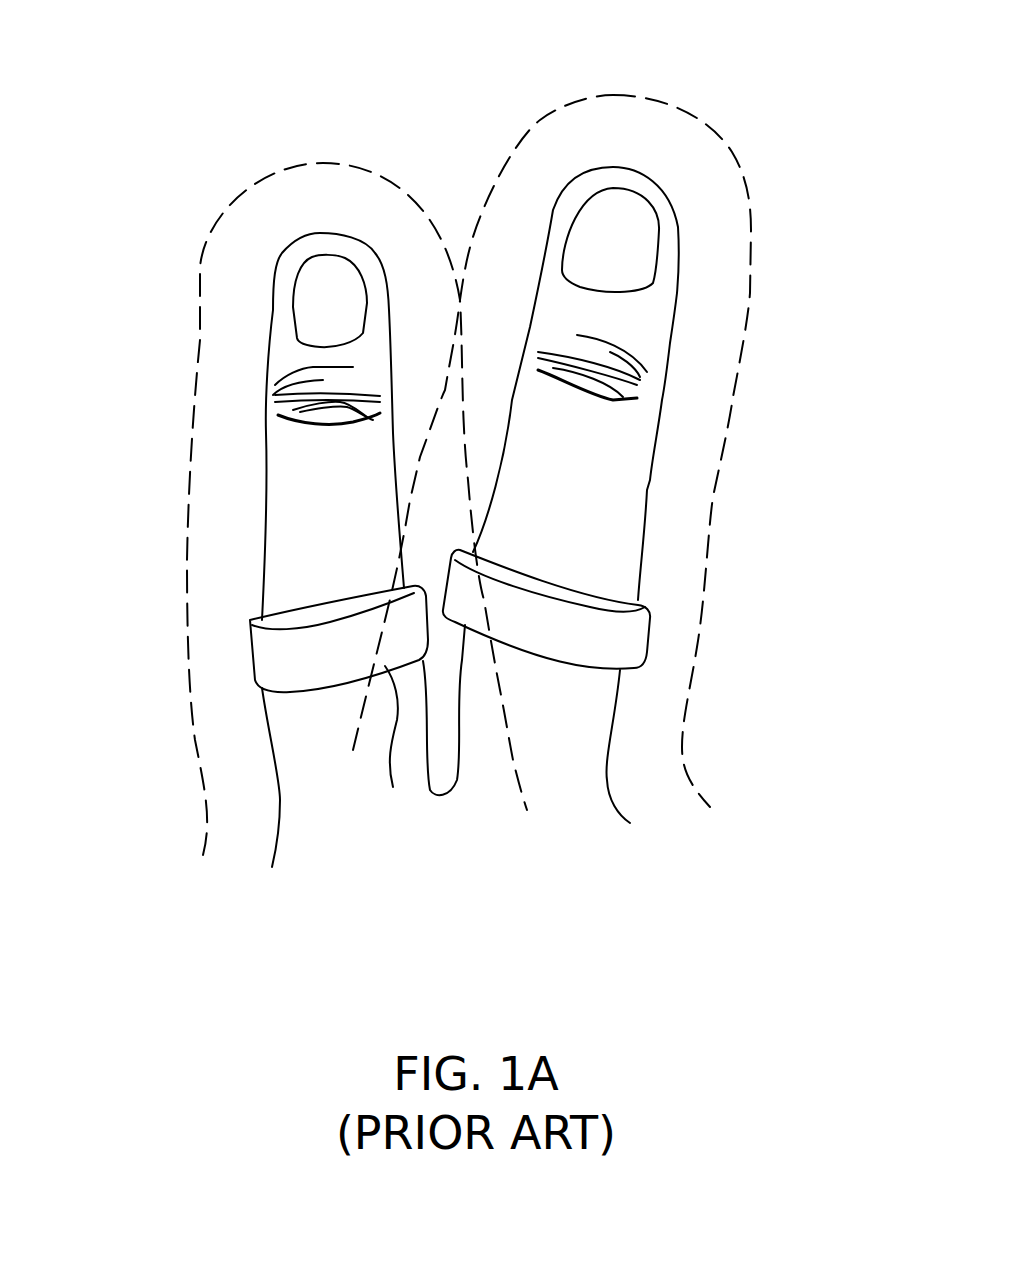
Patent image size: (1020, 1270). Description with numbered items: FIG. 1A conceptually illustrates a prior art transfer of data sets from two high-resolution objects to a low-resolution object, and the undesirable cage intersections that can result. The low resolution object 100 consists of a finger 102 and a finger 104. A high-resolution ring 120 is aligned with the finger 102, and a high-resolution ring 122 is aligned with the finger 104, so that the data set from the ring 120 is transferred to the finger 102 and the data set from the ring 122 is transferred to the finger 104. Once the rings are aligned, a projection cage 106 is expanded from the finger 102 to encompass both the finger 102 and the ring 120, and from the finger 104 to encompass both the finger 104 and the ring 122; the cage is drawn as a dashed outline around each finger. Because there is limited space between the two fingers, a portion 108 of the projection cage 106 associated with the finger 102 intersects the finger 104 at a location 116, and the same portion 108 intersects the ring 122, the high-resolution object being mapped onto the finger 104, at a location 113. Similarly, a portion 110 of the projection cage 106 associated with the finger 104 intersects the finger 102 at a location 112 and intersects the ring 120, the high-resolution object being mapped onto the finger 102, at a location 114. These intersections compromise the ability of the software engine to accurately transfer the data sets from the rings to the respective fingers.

The low resolution object 100 is at (373, 95).
The finger 102 is at (271, 472).
The finger 104 is at (647, 487).
The projection cage 106 is at (747, 290).
The portion of projection cage 108 is at (361, 168).
The portion of projection cage 110 is at (527, 127).
The location 112 is at (393, 577).
The location 113 is at (483, 598).
The location 114 is at (419, 731).
The location 116 is at (513, 760).
The high-resolution ring 120 is at (243, 598).
The high-resolution ring 122 is at (642, 593).